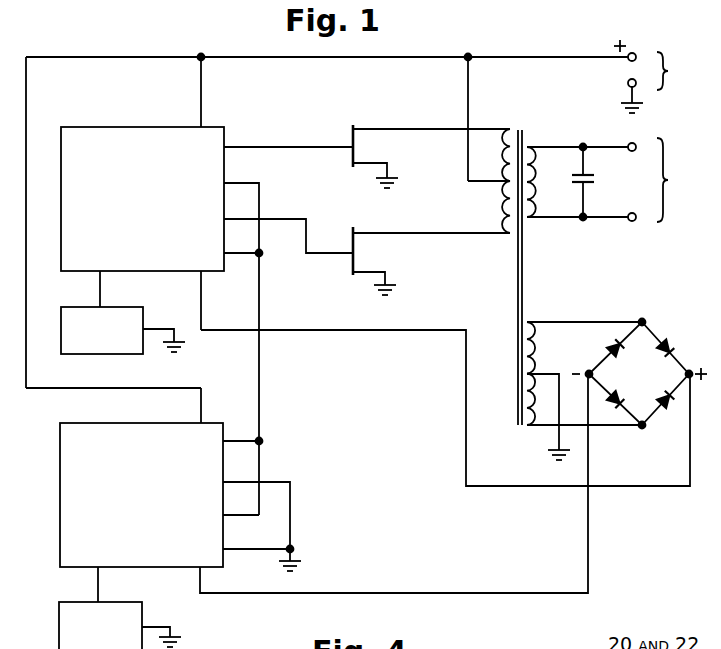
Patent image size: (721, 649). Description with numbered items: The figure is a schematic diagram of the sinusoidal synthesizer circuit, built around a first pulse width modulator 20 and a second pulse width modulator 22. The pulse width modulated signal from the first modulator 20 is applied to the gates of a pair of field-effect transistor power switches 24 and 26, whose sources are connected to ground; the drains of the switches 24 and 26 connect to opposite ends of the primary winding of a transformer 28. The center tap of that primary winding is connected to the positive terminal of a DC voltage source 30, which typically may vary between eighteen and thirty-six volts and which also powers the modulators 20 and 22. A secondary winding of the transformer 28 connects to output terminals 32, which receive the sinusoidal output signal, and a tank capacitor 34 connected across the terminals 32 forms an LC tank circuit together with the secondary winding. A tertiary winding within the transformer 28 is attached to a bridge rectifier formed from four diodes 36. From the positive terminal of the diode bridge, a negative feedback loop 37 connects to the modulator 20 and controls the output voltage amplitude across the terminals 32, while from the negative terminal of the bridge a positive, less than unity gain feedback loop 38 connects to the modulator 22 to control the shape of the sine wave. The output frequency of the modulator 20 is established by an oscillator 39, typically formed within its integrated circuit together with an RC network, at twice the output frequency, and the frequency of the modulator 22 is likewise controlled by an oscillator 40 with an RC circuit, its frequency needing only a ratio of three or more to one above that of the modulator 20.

The first pulse width modulator 20 is at (117, 126).
The second pulse width modulator 22 is at (58, 434).
The field-effect transistor power switch 24 is at (349, 138).
The field-effect transistor power switch 26 is at (349, 262).
The transformer 28 is at (515, 263).
The DC voltage source 30 is at (656, 76).
The output terminals 32 is at (612, 180).
The tank capacitor 34 is at (596, 180).
The diodes 36 is at (653, 381).
The negative feedback loop 37 is at (398, 335).
The positive feedback loop 38 is at (407, 590).
The oscillator 39 is at (144, 316).
The oscillator 40 is at (143, 612).